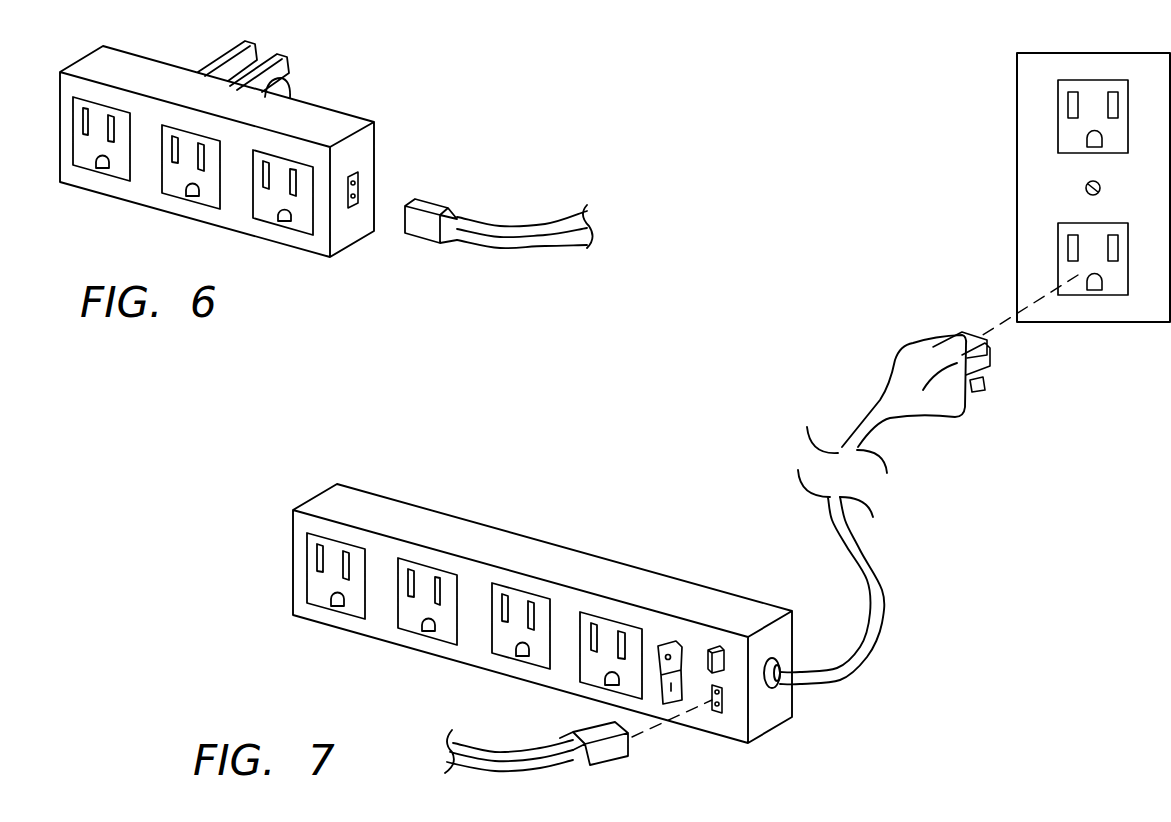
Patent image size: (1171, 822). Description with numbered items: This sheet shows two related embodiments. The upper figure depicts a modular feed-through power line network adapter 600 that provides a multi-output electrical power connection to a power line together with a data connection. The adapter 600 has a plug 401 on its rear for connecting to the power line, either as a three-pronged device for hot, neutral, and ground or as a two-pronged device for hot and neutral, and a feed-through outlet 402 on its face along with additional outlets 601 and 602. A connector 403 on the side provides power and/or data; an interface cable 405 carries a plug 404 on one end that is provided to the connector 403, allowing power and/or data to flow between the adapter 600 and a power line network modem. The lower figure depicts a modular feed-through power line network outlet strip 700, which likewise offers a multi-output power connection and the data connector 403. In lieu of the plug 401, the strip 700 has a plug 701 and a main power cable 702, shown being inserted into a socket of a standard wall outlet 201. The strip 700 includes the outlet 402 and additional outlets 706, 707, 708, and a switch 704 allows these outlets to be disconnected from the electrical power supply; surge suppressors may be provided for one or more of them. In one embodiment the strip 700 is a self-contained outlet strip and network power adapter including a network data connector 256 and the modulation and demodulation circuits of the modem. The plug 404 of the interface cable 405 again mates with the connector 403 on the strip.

In FIG. 7, the standard wall outlet 201 is at (1037, 53).
In FIG. 7, the network data connector 256 is at (712, 647).
In FIG. 6, the plug 401 is at (280, 40).
In FIG. 6, the feed-through outlet 402 is at (118, 185).
In FIG. 7, the feed-through outlet 402 is at (588, 673).
In FIG. 6, the connector 403 is at (358, 173).
In FIG. 7, the connector 403 is at (717, 714).
In FIG. 6, the plug 404 is at (418, 231).
In FIG. 7, the plug 404 is at (603, 754).
In FIG. 6, the interface cable 405 is at (510, 225).
In FIG. 7, the interface cable 405 is at (515, 755).
In FIG. 6, the modular feed-through power line network adapter 600 is at (331, 323).
In FIG. 6, the additional outlet 601 is at (200, 208).
In FIG. 6, the additional outlet 602 is at (277, 232).
In FIG. 7, the modular feed-through power line network outlet strip 700 is at (337, 495).
In FIG. 7, the plug 701 is at (920, 367).
In FIG. 7, the main power cable 702 is at (852, 550).
In FIG. 7, the switch 704 is at (665, 643).
In FIG. 7, the additional outlet 706 is at (507, 660).
In FIG. 7, the additional outlet 707 is at (417, 628).
In FIG. 7, the additional outlet 708 is at (322, 599).